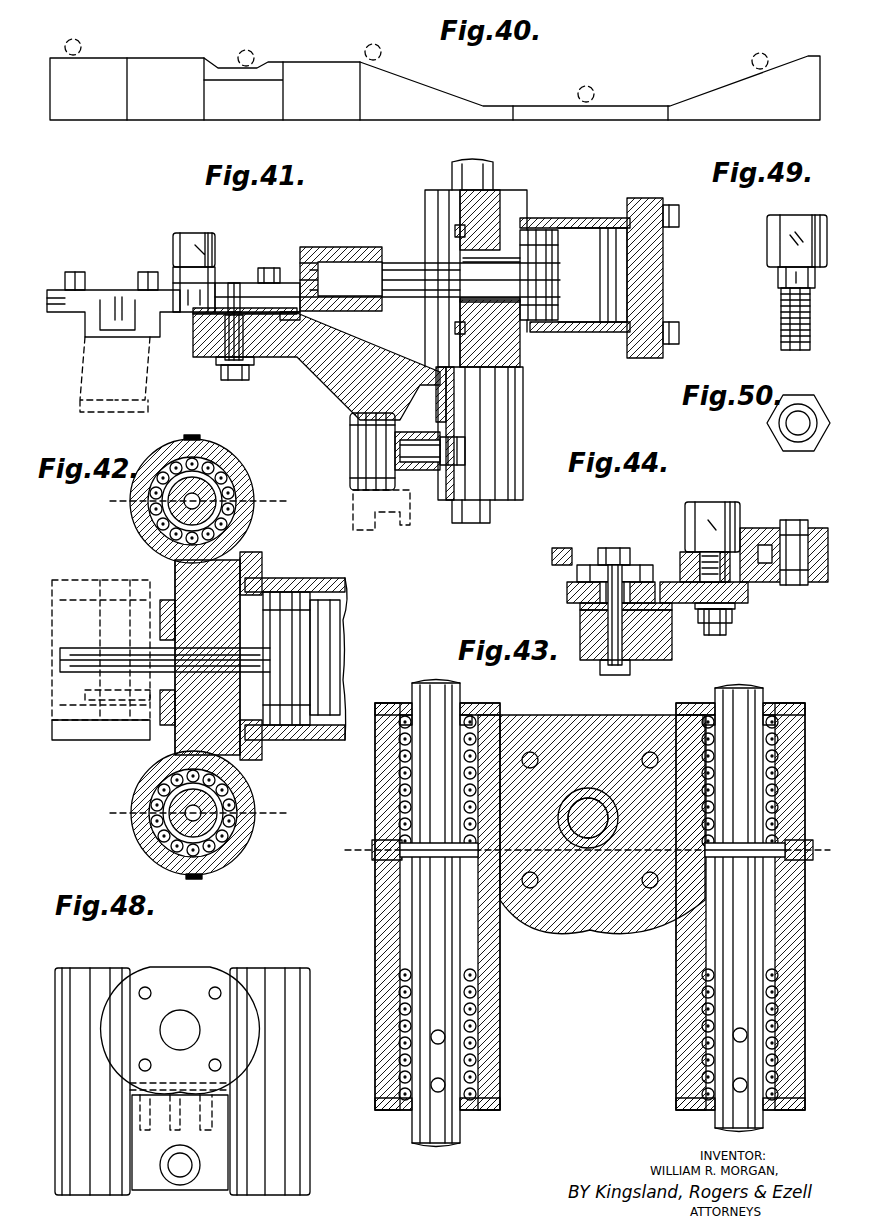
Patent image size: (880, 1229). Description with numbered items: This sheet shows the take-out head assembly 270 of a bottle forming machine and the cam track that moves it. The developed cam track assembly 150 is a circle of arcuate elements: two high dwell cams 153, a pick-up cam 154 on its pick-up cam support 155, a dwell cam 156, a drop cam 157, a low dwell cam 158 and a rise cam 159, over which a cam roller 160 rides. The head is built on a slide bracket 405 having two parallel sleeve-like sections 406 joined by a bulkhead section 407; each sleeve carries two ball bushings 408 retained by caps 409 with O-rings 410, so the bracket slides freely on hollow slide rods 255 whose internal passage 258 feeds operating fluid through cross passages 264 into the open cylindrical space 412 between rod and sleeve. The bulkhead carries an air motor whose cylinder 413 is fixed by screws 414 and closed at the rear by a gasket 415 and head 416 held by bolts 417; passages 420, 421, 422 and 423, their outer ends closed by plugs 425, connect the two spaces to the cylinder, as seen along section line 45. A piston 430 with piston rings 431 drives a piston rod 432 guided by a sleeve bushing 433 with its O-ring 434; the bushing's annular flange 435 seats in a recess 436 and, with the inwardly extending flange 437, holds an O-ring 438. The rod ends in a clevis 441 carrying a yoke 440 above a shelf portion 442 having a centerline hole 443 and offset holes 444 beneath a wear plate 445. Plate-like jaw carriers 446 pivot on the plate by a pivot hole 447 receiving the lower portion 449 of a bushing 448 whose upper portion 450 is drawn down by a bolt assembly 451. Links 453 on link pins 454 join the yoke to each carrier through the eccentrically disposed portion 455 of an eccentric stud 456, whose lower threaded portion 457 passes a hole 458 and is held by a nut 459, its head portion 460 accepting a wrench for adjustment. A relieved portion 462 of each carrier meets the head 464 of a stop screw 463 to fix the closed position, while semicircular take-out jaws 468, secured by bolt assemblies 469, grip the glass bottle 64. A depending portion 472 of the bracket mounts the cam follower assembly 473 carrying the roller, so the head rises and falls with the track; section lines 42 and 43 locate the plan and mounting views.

In FIG. 41, the section line 42— 42 is at (580, 290).
In FIG. 41, the section line 43— 43 is at (490, 537).
In FIG. 43, the section line 45— 45 is at (825, 868).
In FIG. 41, the glass bottle 64 is at (80, 402).
In FIG. 40, the cam track assembly 150 is at (500, 98).
In FIG. 41, the cam track assembly 150 is at (360, 516).
In FIG. 42, the cam track assembly 150 is at (345, 520).
In FIG. 40, the high dwell cam 153 is at (180, 112).
In FIG. 40, the pick-up cam 154 is at (218, 66).
In FIG. 40, the pick-up cam support 155 is at (255, 112).
In FIG. 40, the dwell cam 156 is at (318, 68).
In FIG. 40, the drop cam 157 is at (388, 112).
In FIG. 40, the low dwell cam 158 is at (628, 110).
In FIG. 40, the rise cam 159 is at (752, 88).
In FIG. 40, the cam roller 160 is at (773, 38).
In FIG. 41, the cam roller 160 is at (360, 448).
In FIG. 42, the cam roller 160 is at (311, 450).
In FIG. 41, the slide rod 255 is at (495, 175).
In FIG. 42, the slide rod 255 is at (132, 815).
In FIG. 43, the slide rod 255 is at (735, 1127).
In FIG. 41, the internal passage 258 is at (452, 170).
In FIG. 42, the internal passage 258 is at (165, 806).
In FIG. 43, the internal passage 258 is at (752, 1132).
In FIG. 42, the passages 264 is at (213, 653).
In FIG. 43, the passages 264 is at (733, 1085).
In FIG. 41, the take-out head assembly 270 is at (378, 247).
In FIG. 42, the take-out head assembly 270 is at (320, 574).
In FIG. 44, the take-out head assembly 270 is at (642, 468).
In FIG. 43, the take-out head assembly 270 is at (770, 690).
In FIG. 41, the slide bracket 405 is at (523, 420).
In FIG. 42, the slide bracket 405 is at (112, 758).
In FIG. 43, the slide bracket 405 is at (378, 1000).
In FIG. 48, the slide bracket 405 is at (248, 966).
In FIG. 42, the sleeve-like section 406 is at (147, 838).
In FIG. 43, the sleeve-like section 406 is at (690, 985).
In FIG. 48, the sleeve-like section 406 is at (290, 1150).
In FIG. 41, the bulkhead section 407 is at (500, 212).
In FIG. 42, the bulkhead section 407 is at (255, 573).
In FIG. 43, the bulkhead section 407 is at (578, 925).
In FIG. 48, the bulkhead section 407 is at (175, 980).
In FIG. 42, the ball bushing 408 is at (228, 845).
In FIG. 43, the ball bushing 408 is at (705, 1055).
In FIG. 41, the cap 409 is at (513, 500).
In FIG. 42, the cap 409 is at (347, 585).
In FIG. 44, the cap 409 is at (520, 500).
In FIG. 43, the cap 409 is at (690, 1110).
In FIG. 43, the O-ring 410 is at (762, 1112).
In FIG. 43, the open cylindrical space 412 is at (712, 958).
In FIG. 41, the cylinder 413 is at (600, 218).
In FIG. 42, the cylinder 413 is at (342, 603).
In FIG. 41, the screws 414 is at (455, 328).
In FIG. 42, the screws 414 is at (170, 740).
In FIG. 43, the screws 414 is at (534, 888).
In FIG. 41, the gasket 415 is at (640, 200).
In FIG. 41, the head 416 is at (663, 284).
In FIG. 41, the bolts 417 is at (679, 340).
In FIG. 43, the passage 420 is at (388, 840).
In FIG. 43, the passage 421 is at (560, 920).
In FIG. 43, the passage 422 is at (795, 872).
In FIG. 43, the passage 423 is at (662, 900).
In FIG. 42, the plug 425 is at (203, 877).
In FIG. 43, the plug 425 is at (800, 862).
In FIG. 41, the piston 430 is at (535, 332).
In FIG. 42, the piston 430 is at (330, 662).
In FIG. 43, the piston 430 is at (568, 930).
In FIG. 41, the piston rings 431 is at (558, 290).
In FIG. 42, the piston rings 431 is at (305, 632).
In FIG. 41, the piston rod 432 is at (405, 268).
In FIG. 42, the piston rod 432 is at (62, 680).
In FIG. 43, the piston rod 432 is at (592, 850).
In FIG. 41, the sleeve bushing 433 is at (458, 300).
In FIG. 42, the sleeve bushing 433 is at (150, 695).
In FIG. 43, the sleeve bushing 433 is at (590, 788).
In FIG. 41, the O-ring 434 is at (455, 380).
In FIG. 42, the O-ring 434 is at (165, 650).
In FIG. 41, the external annular flange 435 is at (470, 258).
In FIG. 42, the external annular flange 435 is at (255, 645).
In FIG. 42, the recess 436 is at (300, 572).
In FIG. 42, the inwardly extending flange 437 is at (318, 552).
In FIG. 42, the O-ring 438 is at (333, 688).
In FIG. 41, the yoke 440 is at (275, 283).
In FIG. 44, the yoke 440 is at (748, 588).
In FIG. 41, the clevis 441 is at (420, 228).
In FIG. 41, the shelf portion 442 is at (258, 362).
In FIG. 42, the shelf portion 442 is at (78, 742).
In FIG. 44, the shelf portion 442 is at (668, 660).
In FIG. 43, the shelf portion 442 is at (673, 673).
In FIG. 41, the hole 443 is at (248, 375).
In FIG. 44, the holes 444 is at (607, 632).
In FIG. 41, the wear plate 445 is at (254, 360).
In FIG. 44, the wear plate 445 is at (582, 605).
In FIG. 41, the jaw carrier 446 is at (295, 312).
In FIG. 44, the jaw carrier 446 is at (745, 605).
In FIG. 44, the pivot hole 447 is at (600, 592).
In FIG. 44, the bushing 448 is at (690, 540).
In FIG. 44, the lower portion 449 is at (648, 566).
In FIG. 41, the upper portion 450 is at (302, 247).
In FIG. 44, the upper portion 450 is at (595, 555).
In FIG. 41, the bolt assembly 451 is at (270, 268).
In FIG. 44, the bolt assembly 451 is at (598, 665).
In FIG. 43, the bolt assembly 451 is at (582, 718).
In FIG. 41, the link 453 is at (195, 283).
In FIG. 44, the link 453 is at (770, 528).
In FIG. 44, the link pin 454 is at (800, 522).
In FIG. 49, the eccentrically disposed portion 455 is at (778, 284).
In FIG. 50, the eccentrically disposed portion 455 is at (799, 408).
In FIG. 44, the eccentrically disposed portion 455 is at (705, 525).
In FIG. 41, the eccentric stud 456 is at (190, 233).
In FIG. 49, the eccentric stud 456 is at (767, 240).
In FIG. 50, the eccentric stud 456 is at (805, 396).
In FIG. 44, the eccentric stud 456 is at (712, 502).
In FIG. 49, the lower threaded portion 457 is at (781, 310).
In FIG. 50, the lower threaded portion 457 is at (786, 425).
In FIG. 44, the lower threaded portion 457 is at (727, 626).
In FIG. 44, the hole 458 is at (735, 606).
In FIG. 44, the nut 459 is at (700, 632).
In FIG. 41, the head portion 460 is at (202, 233).
In FIG. 49, the head portion 460 is at (838, 195).
In FIG. 50, the head portion 460 is at (808, 450).
In FIG. 44, the head portion 460 is at (738, 502).
In FIG. 41, the relieved portion 462 is at (225, 322).
In FIG. 41, the stop screw 463 is at (225, 338).
In FIG. 41, the head 464 is at (235, 282).
In FIG. 41, the take-out jaw 468 is at (88, 332).
In FIG. 41, the bolt assembly 469 is at (150, 272).
In FIG. 41, the depending portion 472 is at (480, 405).
In FIG. 42, the depending portion 472 is at (95, 620).
In FIG. 48, the depending portion 472 is at (152, 1188).
In FIG. 41, the cam follower assembly 473 is at (425, 495).